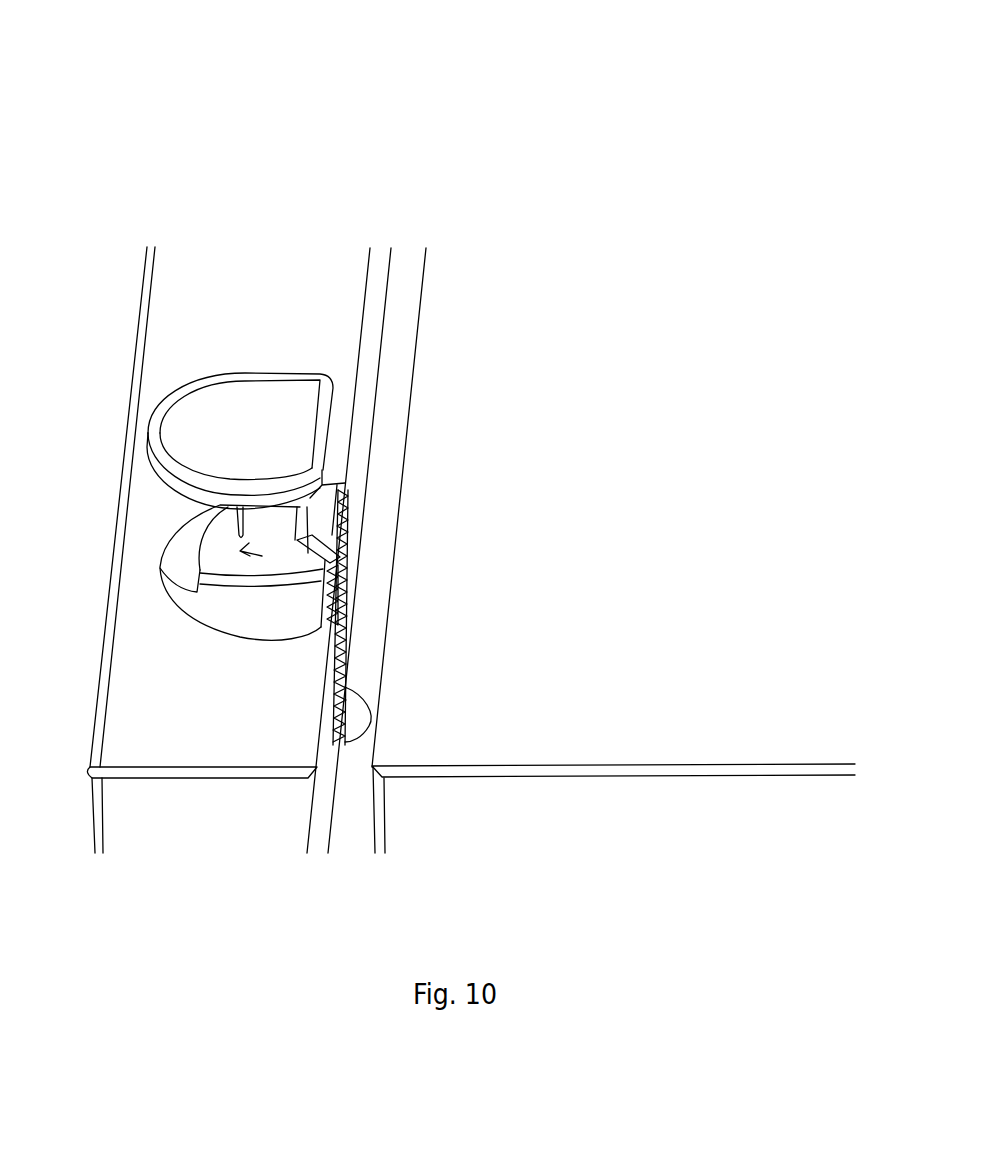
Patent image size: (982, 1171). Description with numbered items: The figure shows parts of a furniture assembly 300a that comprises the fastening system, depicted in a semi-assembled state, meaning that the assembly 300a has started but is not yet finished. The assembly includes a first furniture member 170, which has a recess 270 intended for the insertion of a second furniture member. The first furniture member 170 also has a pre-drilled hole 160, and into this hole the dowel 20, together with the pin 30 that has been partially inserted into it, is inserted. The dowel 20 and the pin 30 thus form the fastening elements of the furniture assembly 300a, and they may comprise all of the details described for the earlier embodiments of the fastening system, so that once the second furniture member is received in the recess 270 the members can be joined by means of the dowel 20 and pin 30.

The furniture assembly 300a is at (120, 100).
The first furniture member 170 is at (345, 277).
The recess 270 is at (402, 307).
The pin 30 is at (205, 407).
The dowel 20 is at (222, 611).
The pre-drilled hole 160 is at (357, 717).